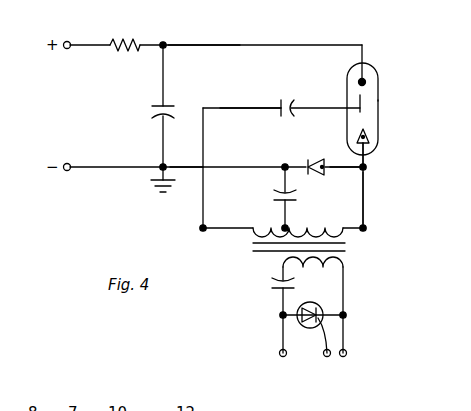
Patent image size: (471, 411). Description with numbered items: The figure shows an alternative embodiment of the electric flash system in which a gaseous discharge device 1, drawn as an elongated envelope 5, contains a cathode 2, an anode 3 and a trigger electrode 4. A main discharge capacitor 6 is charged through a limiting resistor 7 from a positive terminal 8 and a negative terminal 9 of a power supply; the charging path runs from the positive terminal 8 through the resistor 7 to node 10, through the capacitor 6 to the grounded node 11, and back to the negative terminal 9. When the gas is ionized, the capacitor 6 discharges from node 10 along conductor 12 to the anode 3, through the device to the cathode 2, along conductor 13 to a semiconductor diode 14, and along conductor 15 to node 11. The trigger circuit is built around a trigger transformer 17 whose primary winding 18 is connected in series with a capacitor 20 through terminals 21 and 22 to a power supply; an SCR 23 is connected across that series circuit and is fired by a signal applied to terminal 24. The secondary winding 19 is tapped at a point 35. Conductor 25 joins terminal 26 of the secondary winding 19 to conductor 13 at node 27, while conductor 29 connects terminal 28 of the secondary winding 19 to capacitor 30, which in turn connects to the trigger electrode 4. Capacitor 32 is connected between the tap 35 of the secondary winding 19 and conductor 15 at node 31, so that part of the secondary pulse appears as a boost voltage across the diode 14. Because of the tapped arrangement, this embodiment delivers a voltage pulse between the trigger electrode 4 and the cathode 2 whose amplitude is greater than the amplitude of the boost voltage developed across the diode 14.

The gaseous discharge device 1 is at (373, 114).
The cathode 2 is at (381, 138).
The anode 3 is at (366, 80).
The trigger electrode 4 is at (362, 106).
The envelope 5 is at (379, 148).
The main discharge capacitor 6 is at (157, 104).
The limiting resistor 7 is at (114, 40).
The positive terminal 8 is at (67, 41).
The negative terminal 9 is at (67, 163).
The node 10 is at (161, 41).
The node 11 is at (159, 164).
The conductor 12 is at (185, 44).
The conductor 13 is at (367, 167).
The semiconductor diode 14 is at (318, 158).
The conductor 15 is at (186, 166).
The trigger transformer 17 is at (345, 252).
The primary winding 18 is at (314, 266).
The secondary winding 19 is at (318, 227).
The capacitor 20 is at (272, 288).
The terminal 21 is at (279, 351).
The terminal 22 is at (347, 351).
The SCR 23 is at (322, 306).
The terminal 24 is at (323, 353).
The conductor 25 is at (367, 184).
The terminal 26 is at (367, 227).
The node 27 is at (359, 165).
The terminal 28 is at (199, 229).
The conductor 29 is at (250, 107).
The capacitor 30 is at (296, 106).
The node 31 is at (281, 164).
The capacitor 32 is at (274, 199).
The tap point 35 is at (281, 226).